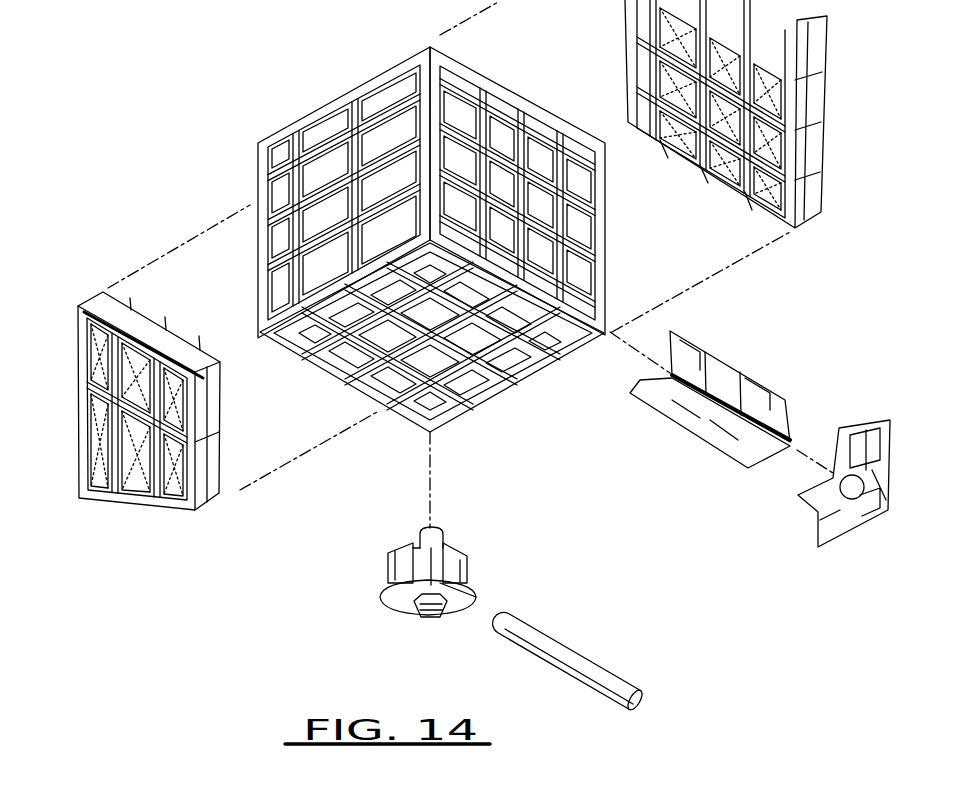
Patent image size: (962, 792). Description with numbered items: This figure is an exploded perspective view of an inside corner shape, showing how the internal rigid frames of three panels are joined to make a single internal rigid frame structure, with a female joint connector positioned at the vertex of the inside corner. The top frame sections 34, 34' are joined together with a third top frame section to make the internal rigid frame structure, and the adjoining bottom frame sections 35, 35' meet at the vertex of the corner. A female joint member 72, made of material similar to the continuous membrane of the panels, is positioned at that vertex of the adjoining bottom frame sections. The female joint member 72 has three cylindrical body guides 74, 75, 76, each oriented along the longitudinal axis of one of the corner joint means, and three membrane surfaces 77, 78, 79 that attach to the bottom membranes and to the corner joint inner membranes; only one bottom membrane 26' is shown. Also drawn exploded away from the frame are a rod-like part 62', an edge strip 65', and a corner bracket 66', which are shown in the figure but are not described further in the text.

The top frame section 34 is at (318, 192).
The bottom frame section 35 is at (282, 202).
The top frame section 34' is at (544, 191).
The bottom frame section 35' is at (569, 195).
The bottom membrane 26' is at (122, 401).
The female joint member 72 is at (405, 589).
The cylindrical body guide 74 is at (420, 537).
The cylindrical body guide 75 is at (393, 603).
The cylindrical body guide 76 is at (468, 594).
The membrane surface 77 is at (395, 570).
The membrane surface 78 is at (420, 620).
The membrane surface 79 is at (463, 555).
The rod 62' is at (578, 662).
The edge strip 65' is at (725, 399).
The corner bracket 66' is at (844, 508).